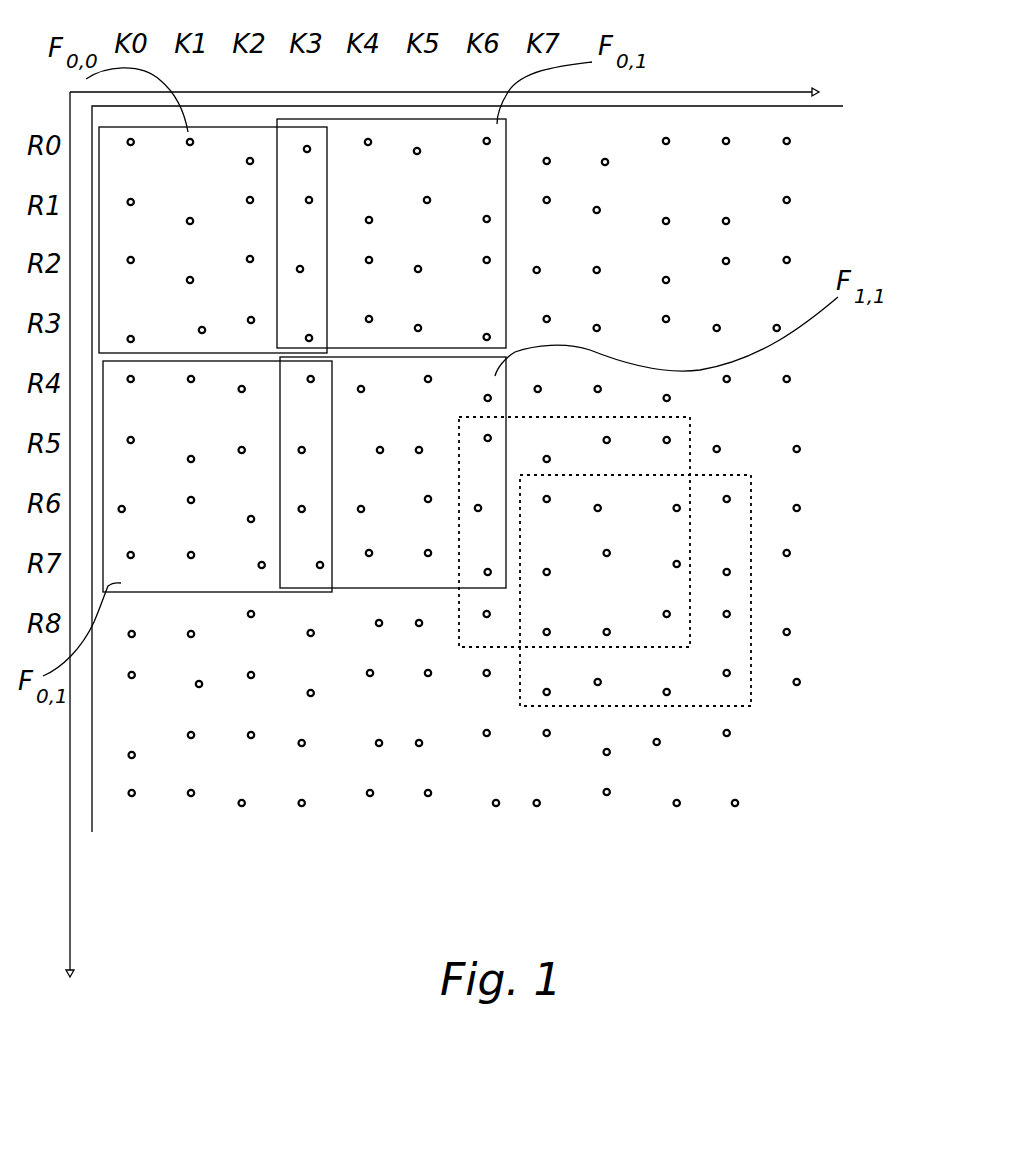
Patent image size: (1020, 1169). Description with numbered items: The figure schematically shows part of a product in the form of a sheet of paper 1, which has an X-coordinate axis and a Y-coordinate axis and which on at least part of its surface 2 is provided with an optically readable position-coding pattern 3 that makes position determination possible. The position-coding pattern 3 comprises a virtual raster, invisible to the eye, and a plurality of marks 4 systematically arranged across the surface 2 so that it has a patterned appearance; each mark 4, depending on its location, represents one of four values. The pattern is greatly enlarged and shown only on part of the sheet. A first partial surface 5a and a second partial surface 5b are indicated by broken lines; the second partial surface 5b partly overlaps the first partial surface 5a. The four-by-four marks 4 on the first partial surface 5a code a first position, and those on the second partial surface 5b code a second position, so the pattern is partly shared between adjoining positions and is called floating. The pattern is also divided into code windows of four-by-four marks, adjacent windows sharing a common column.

The sheet of paper 1 is at (847, 97).
The surface 2 is at (447, 887).
The position-coding pattern 3 is at (302, 820).
The marks 4 is at (612, 798).
The first partial surface 5a is at (678, 432).
The second partial surface 5b is at (742, 517).